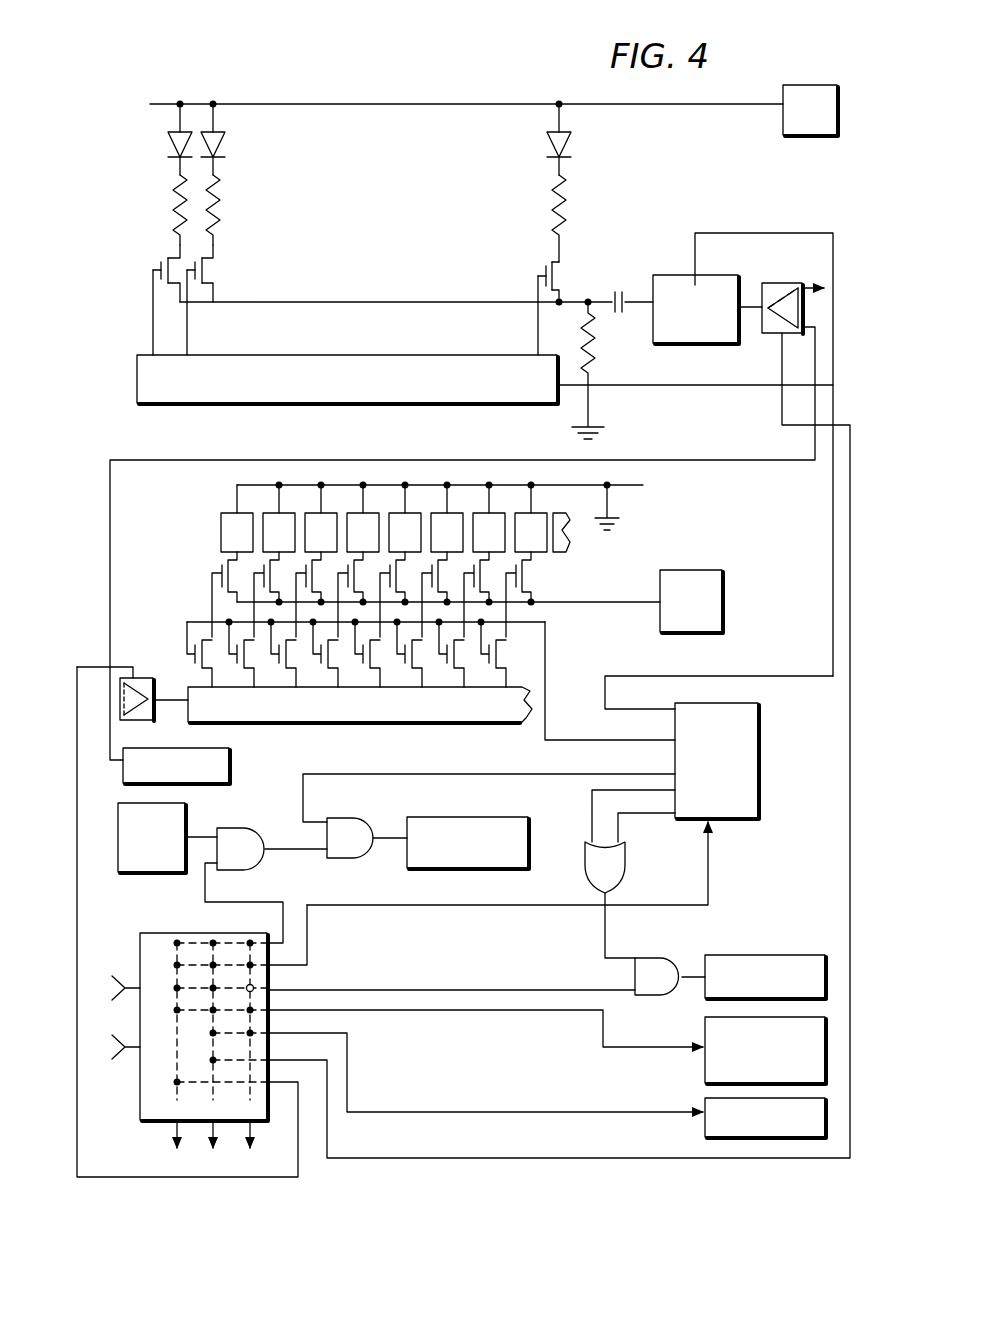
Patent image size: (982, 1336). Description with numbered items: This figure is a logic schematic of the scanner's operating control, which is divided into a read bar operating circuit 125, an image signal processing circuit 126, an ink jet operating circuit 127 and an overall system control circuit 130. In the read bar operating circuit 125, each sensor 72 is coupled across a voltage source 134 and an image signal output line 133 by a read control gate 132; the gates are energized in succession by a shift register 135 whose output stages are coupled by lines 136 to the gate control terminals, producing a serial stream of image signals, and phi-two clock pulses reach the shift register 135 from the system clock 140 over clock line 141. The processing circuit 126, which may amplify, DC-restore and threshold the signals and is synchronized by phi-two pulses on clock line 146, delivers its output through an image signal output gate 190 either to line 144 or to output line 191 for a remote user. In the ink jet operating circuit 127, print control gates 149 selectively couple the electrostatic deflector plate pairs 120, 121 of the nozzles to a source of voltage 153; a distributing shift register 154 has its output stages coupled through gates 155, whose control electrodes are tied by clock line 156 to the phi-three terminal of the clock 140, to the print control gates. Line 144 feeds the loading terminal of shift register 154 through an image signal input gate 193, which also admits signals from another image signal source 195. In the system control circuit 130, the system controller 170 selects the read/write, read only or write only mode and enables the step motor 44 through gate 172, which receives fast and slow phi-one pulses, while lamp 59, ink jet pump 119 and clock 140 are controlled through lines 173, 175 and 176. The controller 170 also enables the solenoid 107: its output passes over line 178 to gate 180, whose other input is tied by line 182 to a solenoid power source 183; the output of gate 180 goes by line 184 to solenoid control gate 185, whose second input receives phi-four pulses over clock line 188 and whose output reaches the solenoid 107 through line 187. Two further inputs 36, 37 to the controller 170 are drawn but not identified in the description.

The sensor 72 is at (220, 128).
The read control gate 132 is at (208, 262).
The image signal output line 133 is at (375, 306).
The voltage source 134 is at (783, 120).
The shift register 135 is at (265, 355).
The lines 136 is at (162, 333).
The read bar operating circuit 125 is at (708, 185).
The clock line 146 is at (815, 232).
The image signal processing circuit 126 is at (680, 275).
The image signal output gate 190 is at (768, 283).
The output line 191 is at (818, 285).
The clock line 141 is at (708, 384).
The line 144 is at (684, 445).
The electrostatic deflector plate pair 120 is at (386, 512).
The electrostatic deflector plate pair 121 is at (279, 512).
The print control gate 149 is at (265, 571).
The ink jet operating circuit 127 is at (668, 516).
The source of voltage 153 is at (722, 575).
The image signal input gate 193 is at (160, 678).
The gates 155 is at (462, 660).
The clock line 156 is at (548, 695).
The distributing shift register 154 is at (432, 728).
The other image signal source 195 is at (250, 760).
The clock line 188 is at (458, 774).
The system clock 140 is at (760, 735).
The solenoid power source 183 is at (187, 830).
The gate 180 is at (255, 840).
The line 187 is at (380, 836).
The solenoid 107 is at (500, 817).
The line 184 is at (308, 852).
The solenoid control gate 185 is at (352, 860).
The line 182 is at (180, 873).
The system controller 170 is at (125, 960).
The line 178 is at (232, 900).
The system control circuit 130 is at (745, 893).
The line 176 is at (310, 952).
The gate 172 is at (686, 938).
The step motor 44 is at (810, 952).
The input terminal 36 is at (125, 998).
The line 175 is at (380, 1012).
The ink jet pump 119 is at (705, 1030).
The input terminal 37 is at (125, 1060).
The line 173 is at (382, 1108).
The lamp 59 is at (705, 1098).